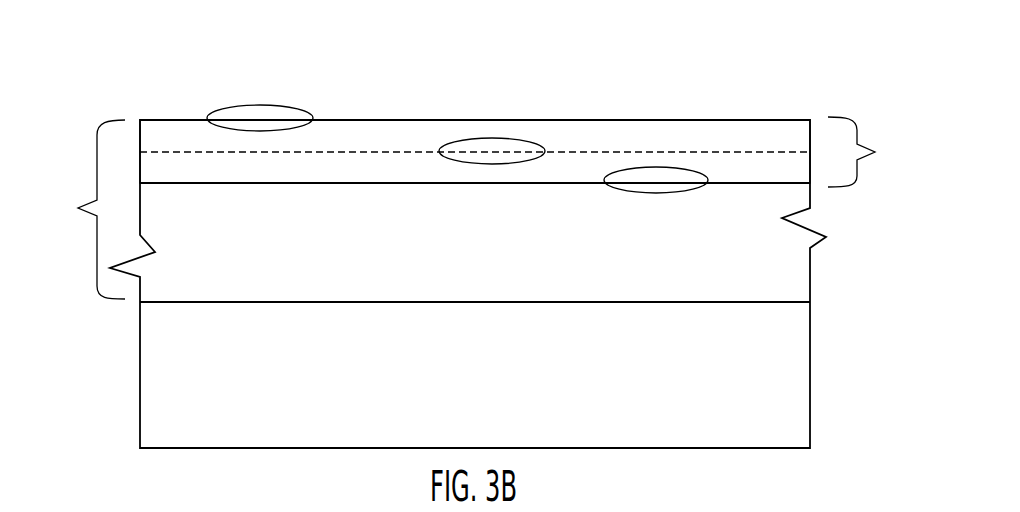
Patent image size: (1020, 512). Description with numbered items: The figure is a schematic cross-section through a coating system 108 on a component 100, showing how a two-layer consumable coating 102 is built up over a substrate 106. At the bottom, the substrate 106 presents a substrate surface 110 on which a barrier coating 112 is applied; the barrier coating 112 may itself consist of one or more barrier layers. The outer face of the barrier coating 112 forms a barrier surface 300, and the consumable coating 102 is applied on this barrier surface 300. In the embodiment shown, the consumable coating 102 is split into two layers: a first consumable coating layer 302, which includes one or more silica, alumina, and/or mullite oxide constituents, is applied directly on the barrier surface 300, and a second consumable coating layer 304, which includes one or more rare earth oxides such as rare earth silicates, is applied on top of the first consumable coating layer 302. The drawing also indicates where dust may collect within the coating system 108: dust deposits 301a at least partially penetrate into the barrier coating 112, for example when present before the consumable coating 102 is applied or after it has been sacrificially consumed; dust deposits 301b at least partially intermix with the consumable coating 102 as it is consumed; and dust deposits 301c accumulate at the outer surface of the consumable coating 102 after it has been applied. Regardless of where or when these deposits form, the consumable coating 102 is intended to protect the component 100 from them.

The component 100 is at (845, 68).
The consumable coating 102 is at (870, 152).
The substrate 106 is at (502, 379).
The coating system 108 is at (81, 209).
The substrate surface 110 is at (775, 299).
The barrier coating 112 is at (502, 246).
The barrier surface 300 is at (735, 183).
The dust deposits 301a is at (650, 167).
The dust deposits 301b is at (490, 137).
The dust deposits 301c is at (257, 104).
The first consumable coating layer 302 is at (427, 181).
The second consumable coating layer 304 is at (427, 147).